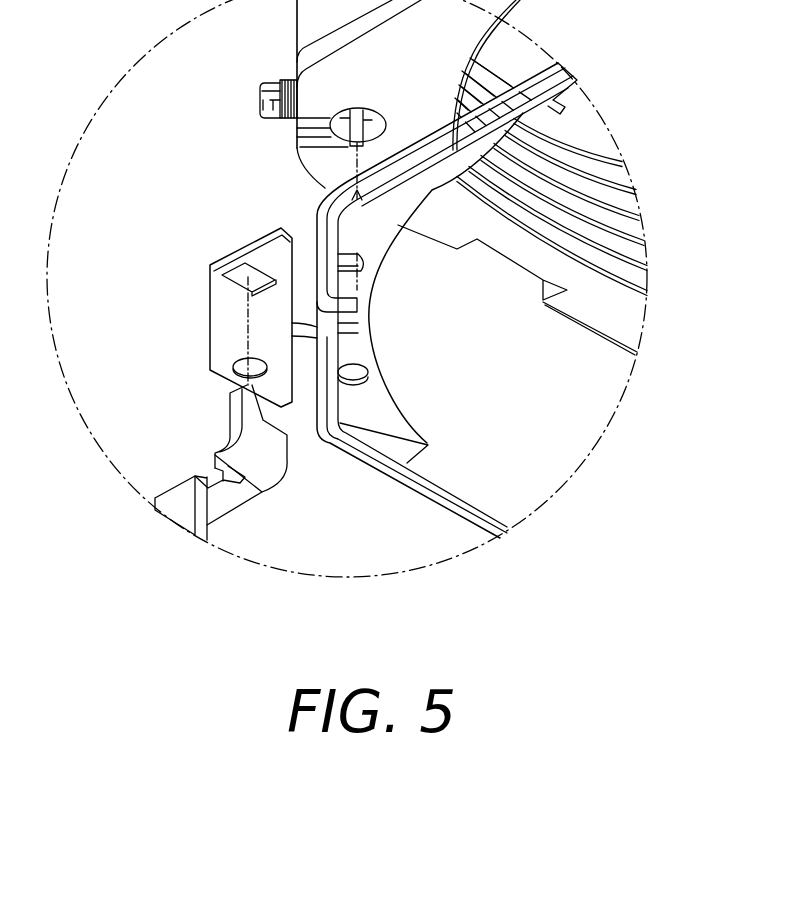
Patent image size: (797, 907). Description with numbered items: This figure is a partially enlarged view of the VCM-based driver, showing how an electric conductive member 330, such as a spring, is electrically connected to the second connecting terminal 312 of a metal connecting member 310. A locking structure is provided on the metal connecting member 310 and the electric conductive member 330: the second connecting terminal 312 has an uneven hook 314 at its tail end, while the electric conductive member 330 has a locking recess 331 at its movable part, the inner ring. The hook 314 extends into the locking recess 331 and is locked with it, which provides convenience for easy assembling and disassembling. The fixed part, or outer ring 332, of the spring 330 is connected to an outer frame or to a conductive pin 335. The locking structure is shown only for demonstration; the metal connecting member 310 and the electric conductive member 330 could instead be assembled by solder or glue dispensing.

The metal connecting member 310 is at (262, 117).
The second connecting terminal 312 is at (297, 146).
The uneven hook 314 is at (384, 116).
The electric conductive member 330 is at (320, 204).
The locking recess 331 is at (366, 266).
The fixed part (outer ring) 332 is at (223, 325).
The conductive pin 335 is at (256, 460).